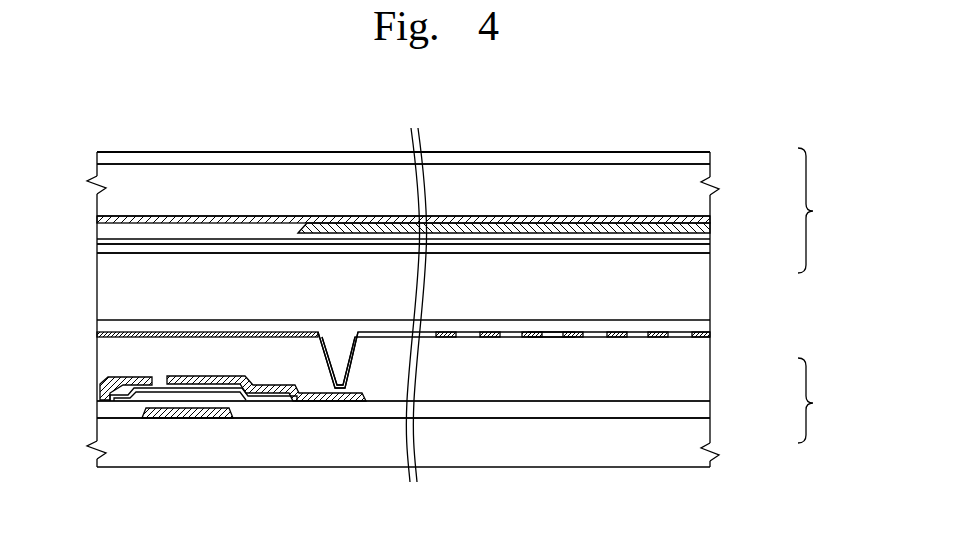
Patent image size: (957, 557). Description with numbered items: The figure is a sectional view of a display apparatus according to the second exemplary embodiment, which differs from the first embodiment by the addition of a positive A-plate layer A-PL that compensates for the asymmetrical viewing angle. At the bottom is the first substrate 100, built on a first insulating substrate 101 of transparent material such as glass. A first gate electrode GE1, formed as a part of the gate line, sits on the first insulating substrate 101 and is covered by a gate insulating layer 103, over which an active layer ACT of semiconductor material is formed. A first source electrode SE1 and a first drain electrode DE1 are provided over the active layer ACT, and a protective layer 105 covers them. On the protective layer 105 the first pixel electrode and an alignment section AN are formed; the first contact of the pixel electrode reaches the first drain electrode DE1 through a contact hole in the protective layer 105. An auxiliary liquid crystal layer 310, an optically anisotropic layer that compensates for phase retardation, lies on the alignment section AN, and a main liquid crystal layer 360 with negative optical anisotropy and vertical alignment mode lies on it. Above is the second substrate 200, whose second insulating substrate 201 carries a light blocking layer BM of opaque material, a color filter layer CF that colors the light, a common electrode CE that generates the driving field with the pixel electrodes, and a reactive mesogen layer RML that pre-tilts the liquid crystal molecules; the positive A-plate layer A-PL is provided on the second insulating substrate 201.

The positive A-plate layer A-PL is at (710, 154).
The second insulating substrate 201 is at (705, 203).
The light blocking layer BM is at (230, 215).
The color filter layer CF is at (708, 222).
The common electrode CE is at (708, 242).
The reactive mesogen layer RML is at (705, 248).
The second substrate 200 is at (825, 210).
The main liquid crystal layer 360 is at (705, 294).
The auxiliary liquid crystal layer 310 is at (712, 326).
The alignment section AN is at (575, 337).
The protective layer 105 is at (705, 369).
The gate insulating layer 103 is at (710, 409).
The first insulating substrate 101 is at (707, 434).
The first substrate 100 is at (825, 400).
The first gate electrode GE1 is at (160, 418).
The active layer ACT is at (212, 396).
The first source electrode SE1 is at (117, 401).
The first drain electrode DE1 is at (265, 396).